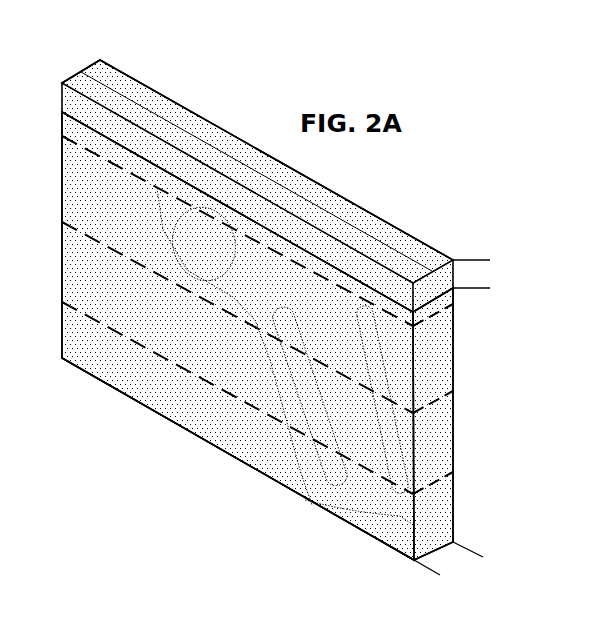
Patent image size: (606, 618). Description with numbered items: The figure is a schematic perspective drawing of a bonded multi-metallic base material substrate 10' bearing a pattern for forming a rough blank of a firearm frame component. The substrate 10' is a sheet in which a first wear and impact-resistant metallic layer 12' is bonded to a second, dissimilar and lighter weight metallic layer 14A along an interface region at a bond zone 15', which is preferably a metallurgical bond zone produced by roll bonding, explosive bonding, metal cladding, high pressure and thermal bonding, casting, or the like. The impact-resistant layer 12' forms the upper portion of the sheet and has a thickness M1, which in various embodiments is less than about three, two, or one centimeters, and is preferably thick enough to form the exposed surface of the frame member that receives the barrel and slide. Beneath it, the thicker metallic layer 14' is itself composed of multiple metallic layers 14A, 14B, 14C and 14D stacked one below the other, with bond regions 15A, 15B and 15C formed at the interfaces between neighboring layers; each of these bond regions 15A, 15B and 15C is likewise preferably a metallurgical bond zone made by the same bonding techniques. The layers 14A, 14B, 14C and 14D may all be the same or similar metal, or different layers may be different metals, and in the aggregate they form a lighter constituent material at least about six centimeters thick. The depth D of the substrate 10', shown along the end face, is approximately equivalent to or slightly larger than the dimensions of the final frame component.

The bonded multi-metallic base material substrate 10' is at (257, 310).
The first wear and impact-resistant metallic layer 12' is at (257, 186).
The thicker metallic layer 14' is at (217, 336).
The metallic layer 14A is at (68, 122).
The metallic layer 14B is at (237, 343).
The metallic layer 14C is at (237, 413).
The metallic layer 14D is at (238, 458).
The bond zone 15' is at (454, 424).
The bond region 15A is at (435, 323).
The bond region 15B is at (437, 410).
The bond region 15C is at (438, 488).
The thickness M1 is at (480, 222).
The depth D is at (500, 537).